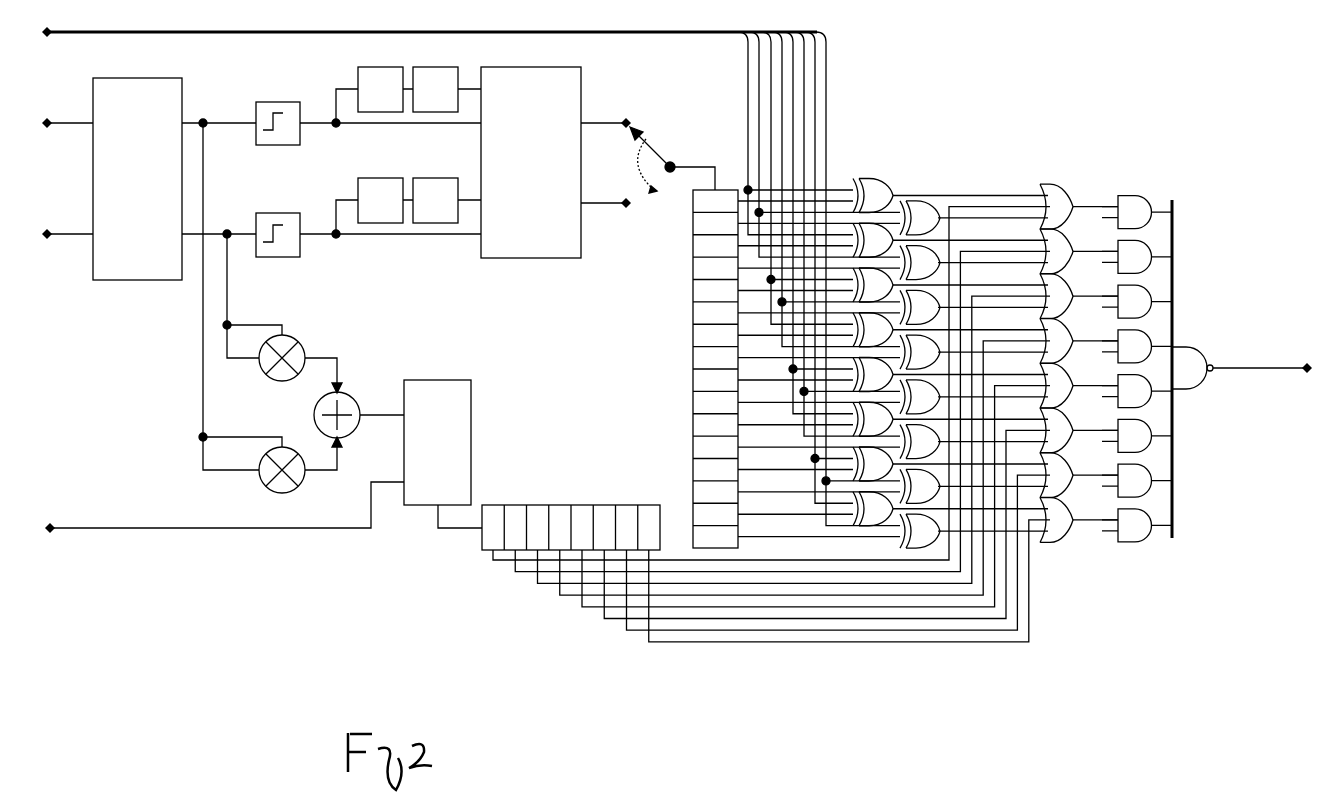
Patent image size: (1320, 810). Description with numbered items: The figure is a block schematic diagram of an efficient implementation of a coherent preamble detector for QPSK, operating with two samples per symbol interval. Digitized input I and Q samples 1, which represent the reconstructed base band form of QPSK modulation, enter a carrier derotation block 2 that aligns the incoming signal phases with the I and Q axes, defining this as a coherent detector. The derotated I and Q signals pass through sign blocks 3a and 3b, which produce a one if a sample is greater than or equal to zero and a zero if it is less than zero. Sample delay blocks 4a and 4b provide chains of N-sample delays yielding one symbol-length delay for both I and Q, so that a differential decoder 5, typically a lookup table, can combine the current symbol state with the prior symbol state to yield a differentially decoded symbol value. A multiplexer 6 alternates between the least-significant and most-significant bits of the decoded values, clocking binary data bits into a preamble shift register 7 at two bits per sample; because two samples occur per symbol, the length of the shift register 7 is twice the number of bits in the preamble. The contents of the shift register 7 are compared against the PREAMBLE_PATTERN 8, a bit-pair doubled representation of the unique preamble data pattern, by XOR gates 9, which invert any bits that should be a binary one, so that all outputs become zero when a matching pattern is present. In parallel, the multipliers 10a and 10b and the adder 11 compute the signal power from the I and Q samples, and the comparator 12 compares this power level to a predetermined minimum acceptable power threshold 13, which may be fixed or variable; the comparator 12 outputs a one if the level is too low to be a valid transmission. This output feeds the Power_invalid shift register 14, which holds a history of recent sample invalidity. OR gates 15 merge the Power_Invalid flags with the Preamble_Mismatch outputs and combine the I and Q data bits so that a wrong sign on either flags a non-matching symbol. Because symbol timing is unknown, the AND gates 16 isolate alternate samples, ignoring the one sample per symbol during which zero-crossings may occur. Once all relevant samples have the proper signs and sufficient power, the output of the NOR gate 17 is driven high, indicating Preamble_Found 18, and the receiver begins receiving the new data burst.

The digitized input I and Q samples 1 is at (52, 142).
The carrier derotation block 2 is at (150, 80).
The sign block 3a is at (294, 103).
The sign block 3b is at (296, 213).
The sample delay block 4a is at (448, 63).
The sample delay block 4b is at (436, 171).
The differential decoder 5 is at (548, 63).
The multiplexer 6 is at (665, 130).
The preamble shift register 7 is at (722, 177).
The PREAMBLE_PATTERN 8 is at (100, 21).
The XOR gates 9 is at (935, 177).
The multiplier 10a is at (313, 339).
The multiplier 10b is at (296, 444).
The adder 11 is at (359, 398).
The comparator 12 is at (460, 383).
The power threshold 13 is at (103, 516).
The Power_invalid shift register 14 is at (636, 500).
The OR gates 15 is at (1087, 178).
The AND gates 16 is at (1153, 186).
The NOR gate 17 is at (1213, 352).
The Preamble_Found 18 is at (1269, 370).